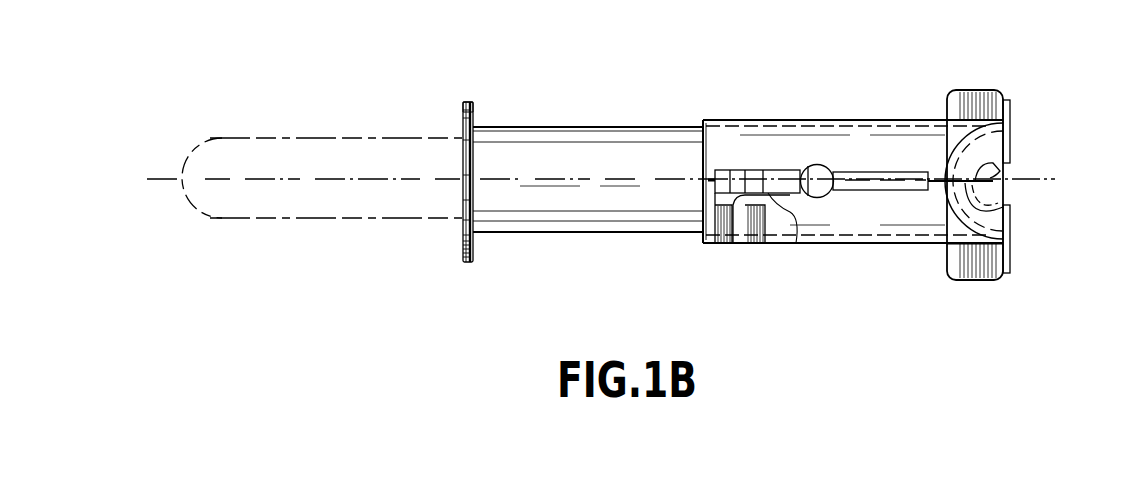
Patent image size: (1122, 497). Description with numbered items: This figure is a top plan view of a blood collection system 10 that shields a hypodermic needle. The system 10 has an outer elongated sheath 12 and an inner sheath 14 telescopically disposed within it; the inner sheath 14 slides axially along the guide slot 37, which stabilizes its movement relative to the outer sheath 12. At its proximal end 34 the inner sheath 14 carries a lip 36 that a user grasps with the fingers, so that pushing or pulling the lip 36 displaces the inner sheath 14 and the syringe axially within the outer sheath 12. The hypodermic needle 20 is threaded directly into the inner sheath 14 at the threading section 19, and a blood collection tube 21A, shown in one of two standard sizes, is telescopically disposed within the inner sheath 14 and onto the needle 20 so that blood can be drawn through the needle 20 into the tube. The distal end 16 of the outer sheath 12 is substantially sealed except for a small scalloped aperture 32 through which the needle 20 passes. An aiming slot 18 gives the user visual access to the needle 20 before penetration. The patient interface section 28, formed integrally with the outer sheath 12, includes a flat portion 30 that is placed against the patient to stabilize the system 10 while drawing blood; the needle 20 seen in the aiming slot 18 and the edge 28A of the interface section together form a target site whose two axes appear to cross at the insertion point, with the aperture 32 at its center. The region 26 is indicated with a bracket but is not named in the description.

The blood collection system 10 is at (708, 297).
The outer elongated sheath 12 is at (875, 120).
The inner sheath 14 is at (620, 127).
The distal end 16 is at (974, 72).
The aiming slot 18 is at (1005, 222).
The threading section 19 is at (782, 205).
The hypodermic needle 20 is at (940, 190).
The blood collection tube 21A is at (333, 218).
The locking mechanism 26 is at (770, 255).
The patient interface section 28 is at (1008, 272).
The edge of the patient interface section 28A is at (1010, 110).
The flat portion 30 is at (972, 266).
The aperture 32 is at (1012, 170).
The proximal end 34 is at (464, 266).
The lip 36 is at (475, 108).
The guide slot 37 is at (855, 191).